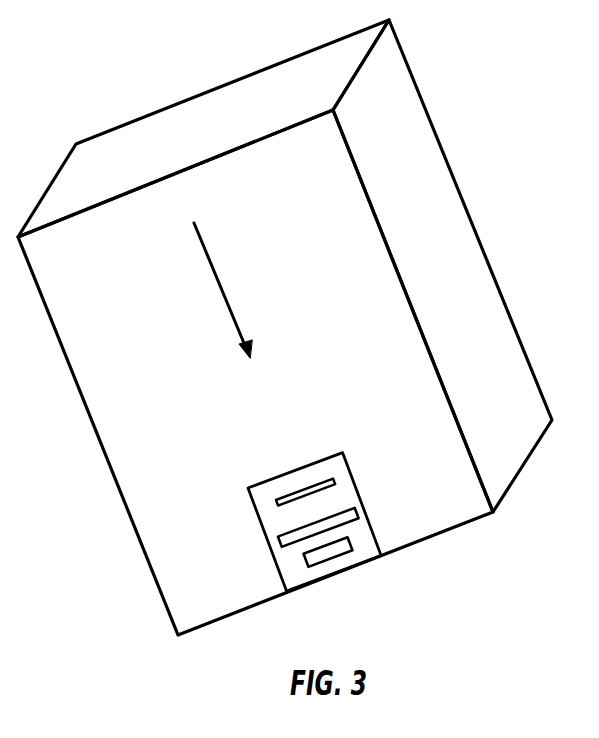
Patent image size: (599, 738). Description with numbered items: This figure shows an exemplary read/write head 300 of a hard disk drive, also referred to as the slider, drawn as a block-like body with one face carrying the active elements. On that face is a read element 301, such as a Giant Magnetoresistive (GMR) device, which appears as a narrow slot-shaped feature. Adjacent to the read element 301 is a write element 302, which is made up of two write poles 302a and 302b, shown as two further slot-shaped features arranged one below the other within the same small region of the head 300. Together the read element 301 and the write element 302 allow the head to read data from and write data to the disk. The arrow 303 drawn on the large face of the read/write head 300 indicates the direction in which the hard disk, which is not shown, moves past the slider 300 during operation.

The read/write head 300 is at (447, 220).
The read element 301 is at (293, 492).
The write element 302 is at (247, 554).
The write pole 302a is at (357, 513).
The write pole 302b is at (343, 551).
The arrow 303 is at (223, 287).